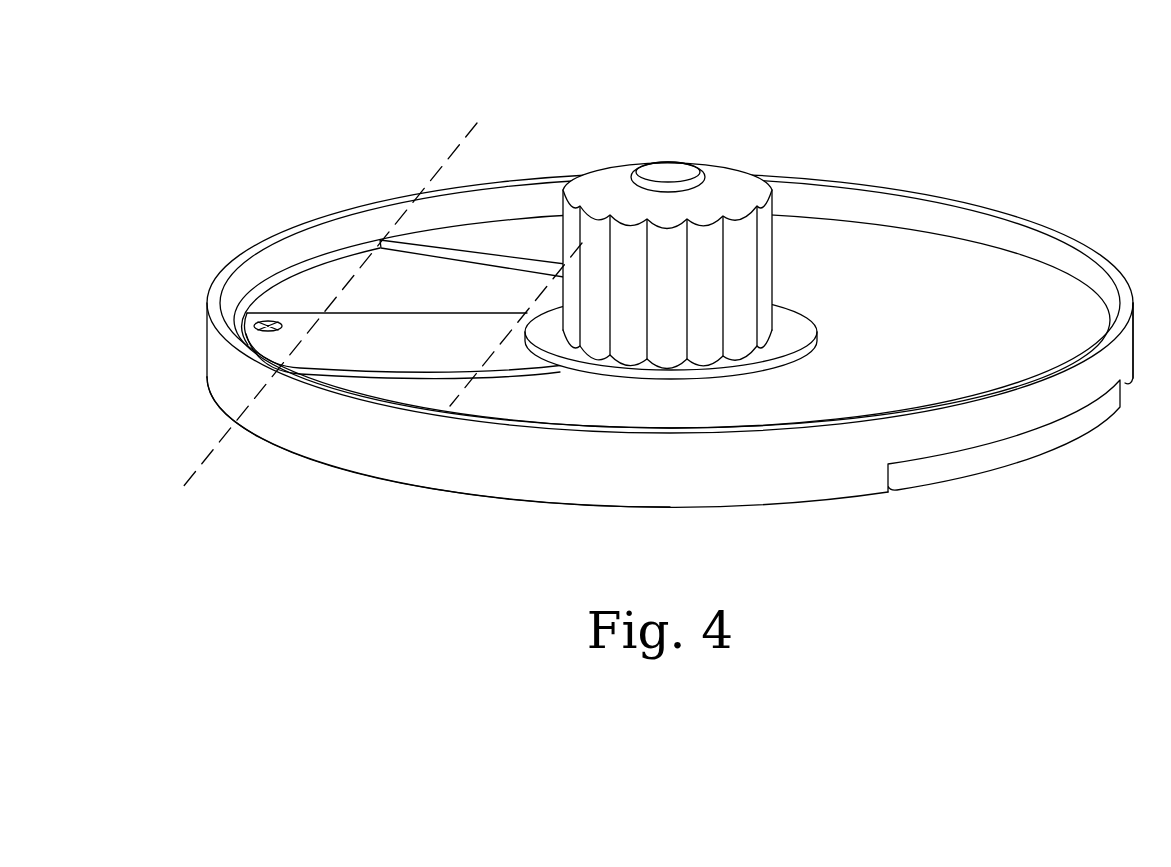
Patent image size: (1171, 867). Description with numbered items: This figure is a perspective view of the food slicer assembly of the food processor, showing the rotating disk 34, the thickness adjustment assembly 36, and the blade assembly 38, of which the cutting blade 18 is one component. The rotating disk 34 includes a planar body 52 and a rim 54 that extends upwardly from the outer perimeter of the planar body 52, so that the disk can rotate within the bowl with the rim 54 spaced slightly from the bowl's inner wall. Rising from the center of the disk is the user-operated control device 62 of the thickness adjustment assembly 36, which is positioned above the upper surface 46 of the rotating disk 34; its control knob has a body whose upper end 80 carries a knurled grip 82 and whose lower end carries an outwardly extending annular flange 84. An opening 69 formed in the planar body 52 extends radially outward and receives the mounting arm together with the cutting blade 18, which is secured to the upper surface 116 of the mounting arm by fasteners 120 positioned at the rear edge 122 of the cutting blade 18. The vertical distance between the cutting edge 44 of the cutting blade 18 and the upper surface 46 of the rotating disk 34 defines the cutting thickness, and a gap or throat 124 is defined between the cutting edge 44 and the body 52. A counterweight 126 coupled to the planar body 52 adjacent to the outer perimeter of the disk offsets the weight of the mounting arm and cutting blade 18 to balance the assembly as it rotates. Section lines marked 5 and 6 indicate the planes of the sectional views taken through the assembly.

The cutting blade 18 is at (376, 287).
The rotating disk 34 is at (1043, 228).
The thickness adjustment assembly 36 is at (693, 216).
The blade assembly 38 is at (263, 194).
The cutting edge 44 is at (333, 367).
The upper surface 46 is at (873, 230).
The planar body 52 is at (970, 245).
The rim 54 is at (1110, 268).
The user-operated control device 62 is at (762, 262).
The opening 69 is at (353, 257).
The upper end 80 is at (735, 182).
The knurled grip 82 is at (740, 342).
The annular flange 84 is at (797, 323).
The upper surface of the mounting arm 116 is at (463, 283).
The fasteners 120 is at (262, 325).
The rear edge 122 is at (468, 342).
The throat 124 is at (367, 372).
The counterweight 126 is at (1002, 452).
The section line 5- 5 is at (447, 138).
The section line 6- 6 is at (553, 258).